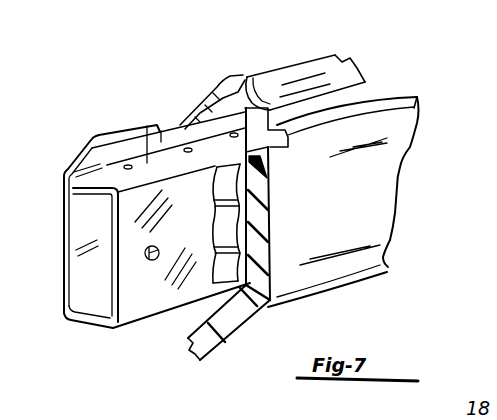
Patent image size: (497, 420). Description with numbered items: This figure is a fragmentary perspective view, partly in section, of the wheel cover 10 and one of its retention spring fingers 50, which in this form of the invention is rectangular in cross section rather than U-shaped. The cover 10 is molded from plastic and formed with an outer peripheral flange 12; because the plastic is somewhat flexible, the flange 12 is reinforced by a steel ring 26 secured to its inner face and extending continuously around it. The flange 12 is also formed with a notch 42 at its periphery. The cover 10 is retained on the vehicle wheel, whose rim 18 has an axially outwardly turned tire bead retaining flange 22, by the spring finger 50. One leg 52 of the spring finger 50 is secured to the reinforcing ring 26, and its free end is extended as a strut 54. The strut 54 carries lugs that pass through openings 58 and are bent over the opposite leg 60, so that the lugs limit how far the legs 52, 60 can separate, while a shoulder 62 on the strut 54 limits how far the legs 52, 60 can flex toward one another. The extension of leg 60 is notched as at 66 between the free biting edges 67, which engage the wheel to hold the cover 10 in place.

The wheel cover 10 is at (231, 340).
The outer peripheral flange 12 is at (392, 195).
The rim 18 is at (363, 66).
The tire bead retaining flange 22 is at (290, 75).
The steel ring 26 is at (233, 221).
The notch 42 is at (270, 160).
The spring finger 50 is at (133, 324).
The leg 52 is at (180, 302).
The strut 54 is at (110, 188).
The opening 58 is at (80, 187).
The leg 60 is at (60, 258).
The shoulder 62 is at (143, 128).
The notch 66 is at (167, 121).
The biting edge 67 is at (123, 103).